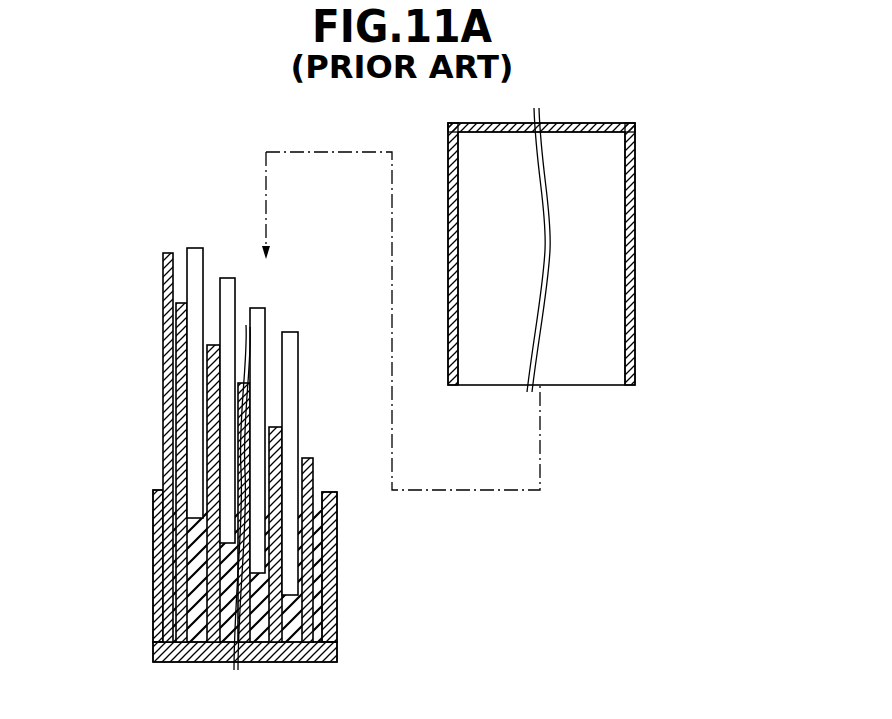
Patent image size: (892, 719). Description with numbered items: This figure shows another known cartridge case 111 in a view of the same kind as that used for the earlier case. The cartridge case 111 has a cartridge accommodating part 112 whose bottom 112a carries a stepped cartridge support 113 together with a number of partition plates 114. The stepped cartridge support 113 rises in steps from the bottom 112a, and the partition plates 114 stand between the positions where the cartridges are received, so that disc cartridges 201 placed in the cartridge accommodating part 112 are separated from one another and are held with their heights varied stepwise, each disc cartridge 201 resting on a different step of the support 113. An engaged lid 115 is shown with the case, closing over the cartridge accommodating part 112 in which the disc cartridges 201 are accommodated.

The cartridge case 111 is at (148, 300).
The cartridge accommodating part 112 is at (150, 598).
The bottom of cartridge accommodating part 112a is at (181, 646).
The stepped cartridge support 113 is at (201, 625).
The partition plates 114 is at (212, 344).
The engaged lid 115 is at (645, 262).
The disc cartridges 201 is at (224, 277).